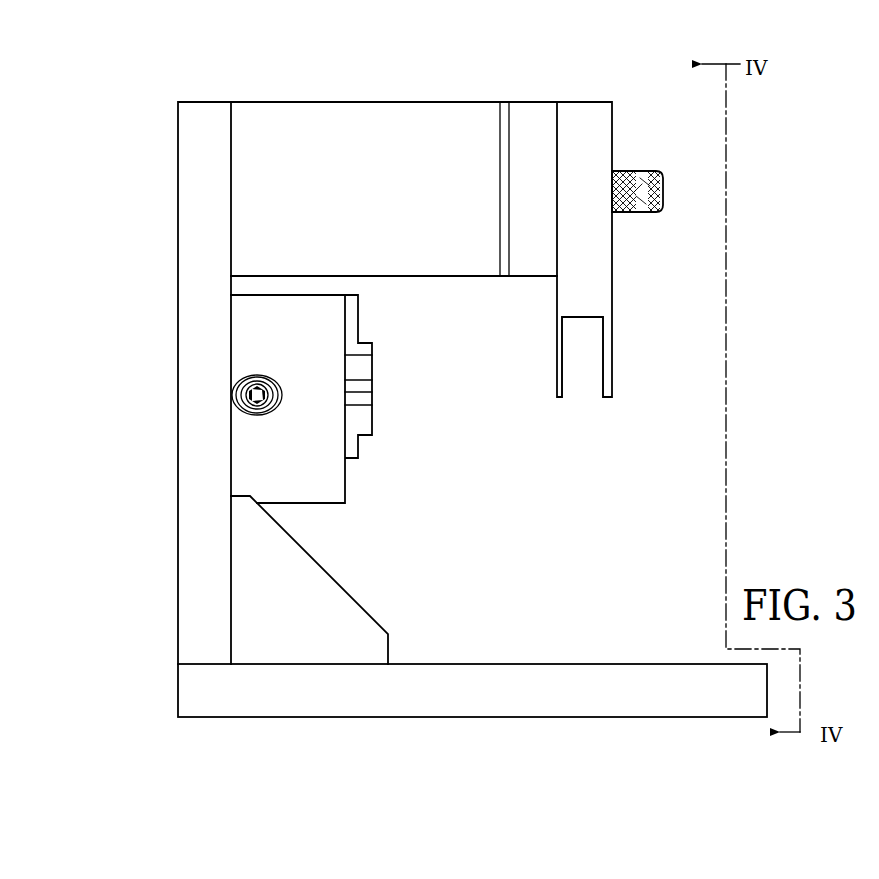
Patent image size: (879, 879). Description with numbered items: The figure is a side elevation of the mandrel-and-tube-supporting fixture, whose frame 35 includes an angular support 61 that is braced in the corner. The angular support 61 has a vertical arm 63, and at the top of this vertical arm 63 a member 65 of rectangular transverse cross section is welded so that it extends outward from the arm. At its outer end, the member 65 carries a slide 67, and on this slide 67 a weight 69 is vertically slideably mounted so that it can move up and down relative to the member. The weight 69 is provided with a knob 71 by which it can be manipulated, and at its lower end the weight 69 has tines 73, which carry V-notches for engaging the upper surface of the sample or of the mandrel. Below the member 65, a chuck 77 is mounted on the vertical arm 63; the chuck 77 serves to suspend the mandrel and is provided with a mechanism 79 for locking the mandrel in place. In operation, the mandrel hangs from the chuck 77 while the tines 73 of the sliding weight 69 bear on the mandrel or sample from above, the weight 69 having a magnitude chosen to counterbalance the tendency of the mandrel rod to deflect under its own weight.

The frame 35 is at (504, 383).
The angular support 61 is at (200, 694).
The vertical arm 63 is at (186, 452).
The member 65 is at (416, 116).
The slide 67 is at (520, 218).
The weight 69 is at (571, 289).
The knob 71 is at (628, 206).
The tines 73 is at (557, 392).
The chuck 77 is at (328, 490).
The mechanism 79 is at (258, 378).